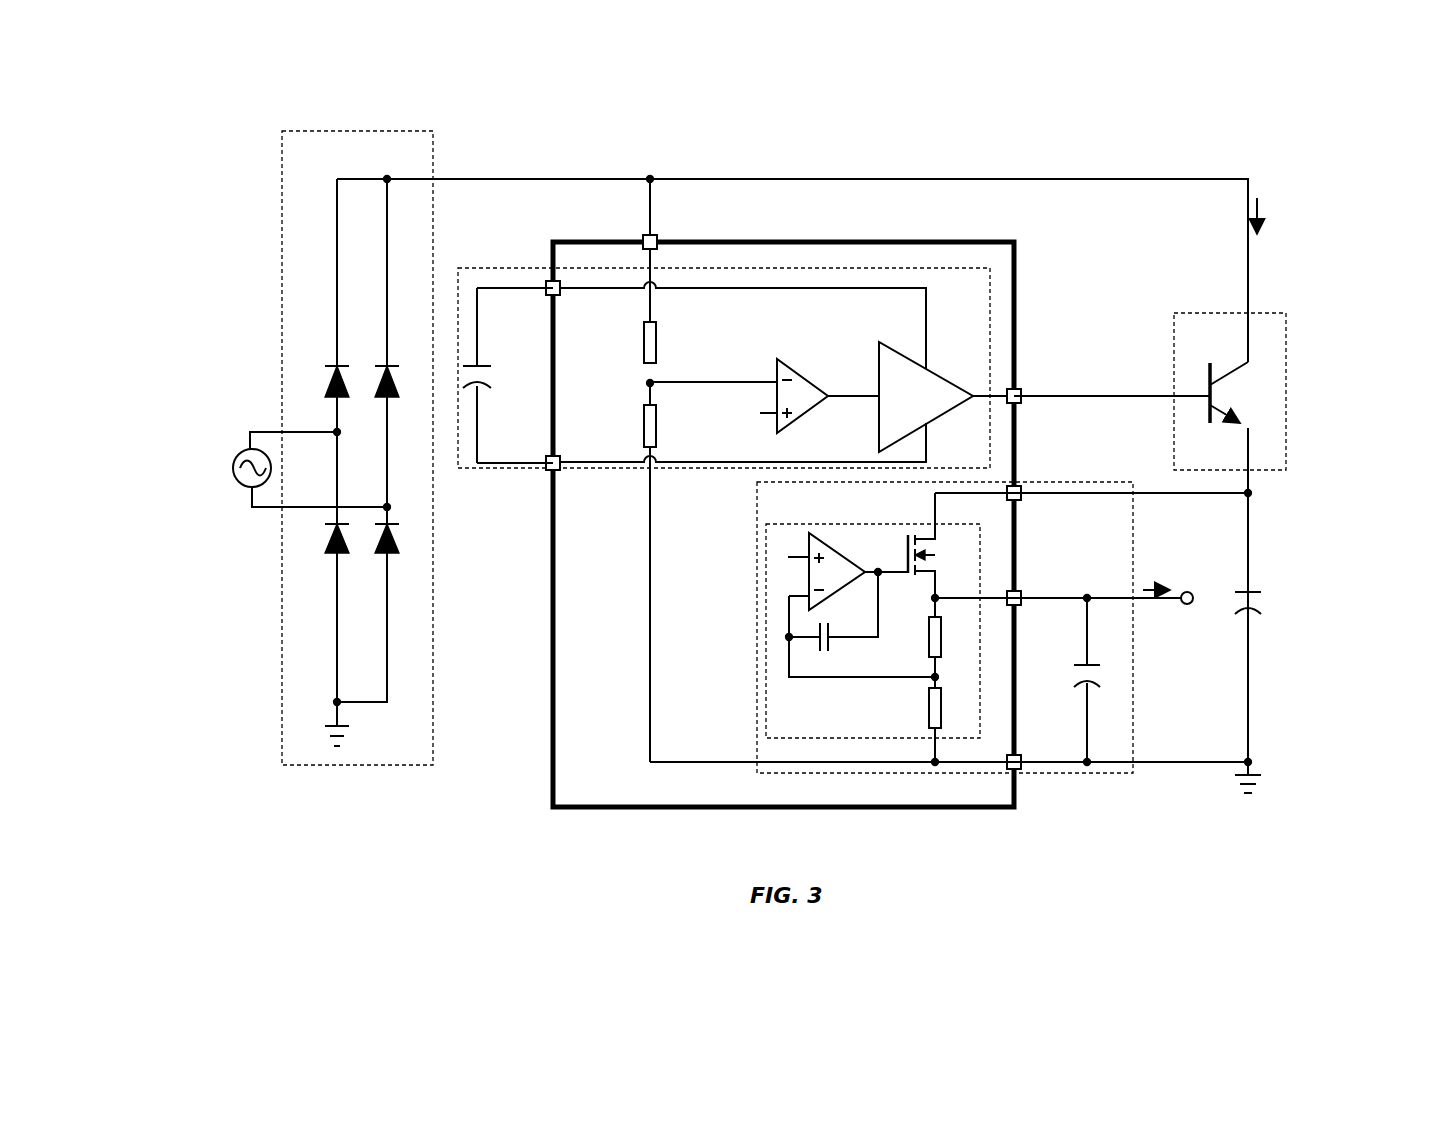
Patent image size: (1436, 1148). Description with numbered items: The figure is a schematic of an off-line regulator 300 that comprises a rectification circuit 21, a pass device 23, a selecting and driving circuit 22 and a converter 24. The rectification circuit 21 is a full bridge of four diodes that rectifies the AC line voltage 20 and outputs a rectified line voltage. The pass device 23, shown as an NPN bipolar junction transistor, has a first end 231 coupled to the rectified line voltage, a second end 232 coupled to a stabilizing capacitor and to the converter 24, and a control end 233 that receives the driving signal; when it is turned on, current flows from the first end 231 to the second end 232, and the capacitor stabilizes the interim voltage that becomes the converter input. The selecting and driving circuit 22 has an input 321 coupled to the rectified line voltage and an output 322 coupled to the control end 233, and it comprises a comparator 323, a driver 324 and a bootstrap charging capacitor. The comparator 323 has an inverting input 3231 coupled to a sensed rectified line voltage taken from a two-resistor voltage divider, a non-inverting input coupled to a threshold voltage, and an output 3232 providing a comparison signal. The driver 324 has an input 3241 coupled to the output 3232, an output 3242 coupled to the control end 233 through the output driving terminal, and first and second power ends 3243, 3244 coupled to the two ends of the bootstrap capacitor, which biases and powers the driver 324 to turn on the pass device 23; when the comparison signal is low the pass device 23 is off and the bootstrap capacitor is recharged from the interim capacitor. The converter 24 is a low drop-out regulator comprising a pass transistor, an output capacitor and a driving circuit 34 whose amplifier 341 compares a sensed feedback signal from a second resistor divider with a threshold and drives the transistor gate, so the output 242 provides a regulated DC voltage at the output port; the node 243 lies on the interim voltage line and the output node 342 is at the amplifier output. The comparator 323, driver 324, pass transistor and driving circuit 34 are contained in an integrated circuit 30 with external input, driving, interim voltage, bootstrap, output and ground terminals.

The off-line regulator 300 is at (1322, 145).
The AC line voltage 20 is at (246, 450).
The rectification circuit 21 is at (433, 765).
The off-line regulator integrated circuit 30 is at (1016, 242).
The input 321 is at (660, 268).
The output 322 is at (1000, 372).
The selecting and driving circuit 22 is at (976, 295).
The comparator 323 is at (778, 362).
The inverting input 3231 is at (770, 382).
The output 3232 is at (830, 398).
The driver 324 is at (950, 386).
The input 3241 is at (877, 395).
The output 3242 is at (1000, 404).
The first power end 3243 is at (930, 370).
The second power end 3244 is at (970, 407).
The pass device 23 is at (1236, 513).
The first end 231 is at (1250, 304).
The second end 232 is at (1250, 470).
The control end 233 is at (1173, 393).
The converter 24 is at (972, 636).
The output 242 is at (1135, 603).
The bias voltage line Vm 243 is at (1133, 492).
The driving circuit 34 is at (844, 614).
The amplifier 341 is at (838, 551).
The error amplifier output node 342 is at (878, 575).